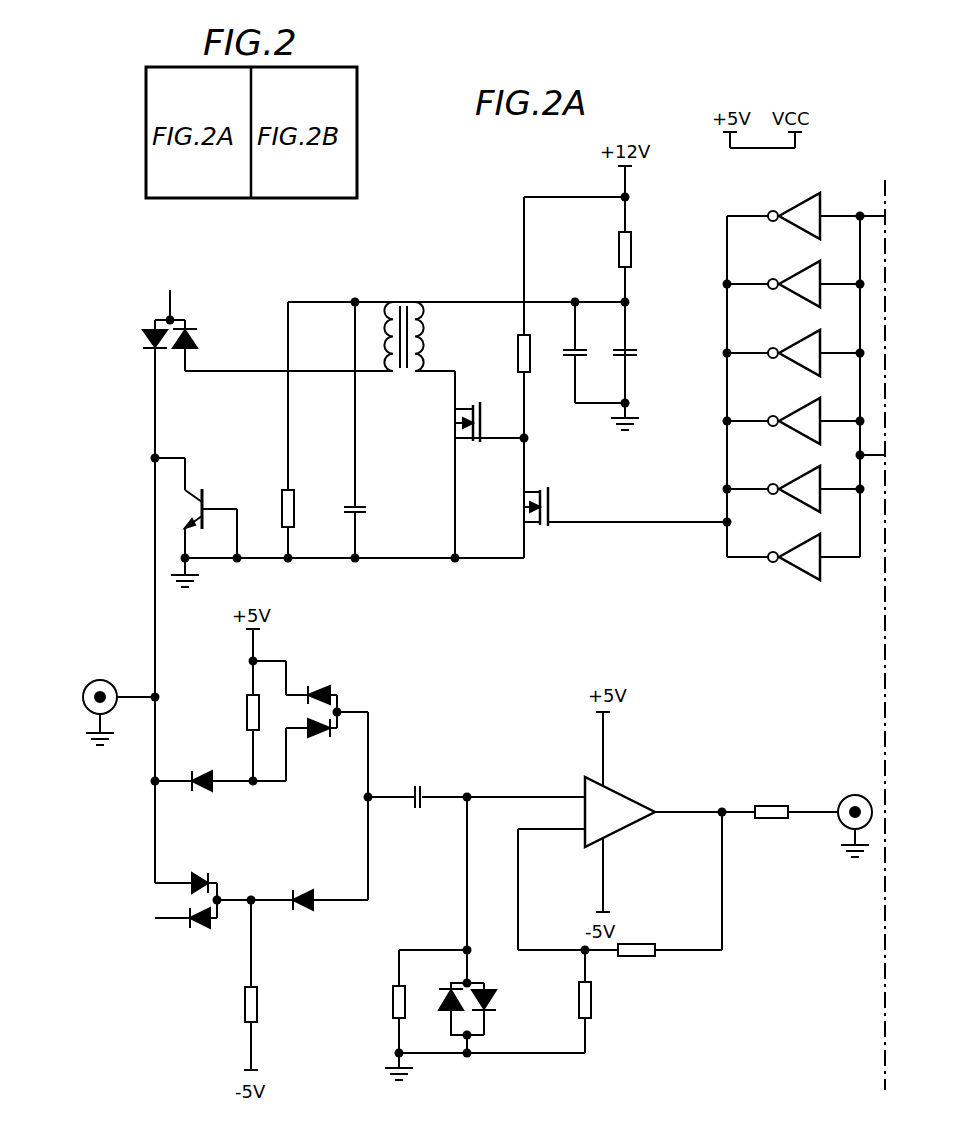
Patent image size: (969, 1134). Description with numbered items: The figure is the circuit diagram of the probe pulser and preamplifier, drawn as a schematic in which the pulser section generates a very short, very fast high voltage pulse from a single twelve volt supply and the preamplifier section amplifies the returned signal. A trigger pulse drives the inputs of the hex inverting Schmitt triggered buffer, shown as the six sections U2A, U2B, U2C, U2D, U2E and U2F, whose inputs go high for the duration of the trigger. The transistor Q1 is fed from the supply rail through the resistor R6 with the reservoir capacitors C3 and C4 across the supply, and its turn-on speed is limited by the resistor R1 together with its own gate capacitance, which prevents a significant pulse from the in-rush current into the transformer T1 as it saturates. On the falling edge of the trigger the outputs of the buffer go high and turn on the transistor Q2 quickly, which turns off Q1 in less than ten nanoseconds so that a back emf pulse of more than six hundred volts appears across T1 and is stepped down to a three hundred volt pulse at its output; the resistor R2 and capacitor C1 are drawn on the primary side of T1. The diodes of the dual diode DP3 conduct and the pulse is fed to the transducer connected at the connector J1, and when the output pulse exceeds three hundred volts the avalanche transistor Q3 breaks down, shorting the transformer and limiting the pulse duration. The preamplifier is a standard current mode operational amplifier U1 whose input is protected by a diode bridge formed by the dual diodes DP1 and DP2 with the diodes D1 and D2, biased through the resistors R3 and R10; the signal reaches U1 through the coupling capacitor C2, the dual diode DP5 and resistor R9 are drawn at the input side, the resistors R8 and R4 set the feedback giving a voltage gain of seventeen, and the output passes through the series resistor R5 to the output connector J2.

The diodes DP3 is at (201, 340).
The avalanche transistor Q3 is at (226, 504).
The resistor 2K7 R2 is at (308, 430).
The capacitor 0.1uF C1 is at (382, 430).
The transformer T1 is at (403, 322).
The transistor Q1 is at (451, 425).
The resistor R1 is at (510, 377).
The resistor 5R0 R6 is at (646, 251).
The capacitor 33uF/16V C3 is at (581, 352).
The capacitor 33uF/16V C4 is at (618, 401).
The transistor Q2 is at (513, 538).
The inverting Schmitt triggered buffer U2A is at (793, 206).
The inverting Schmitt triggered buffer U2B is at (793, 565).
The inverting Schmitt triggered buffer U2C is at (793, 274).
The inverting Schmitt triggered buffer U2D is at (793, 343).
The inverting Schmitt triggered buffer U2E is at (793, 411).
The inverting Schmitt triggered buffer U2F is at (793, 479).
The transducer connector J1 is at (102, 688).
The resistor 10K R3 is at (231, 715).
The diode BYT01-400 D2 is at (208, 784).
The dual diode BAV99 DP1 is at (321, 713).
The dual diode BAV99 DP2 is at (197, 907).
The diode BYT01-400 D1 is at (310, 907).
The resistor 10K R10 is at (271, 985).
The capacitor 0.1uF C2 is at (415, 798).
The op amp EL2130 U1 is at (621, 824).
The resistor 51R R5 is at (775, 811).
The SMA connector J2 is at (855, 801).
The resistor 820R R8 is at (642, 951).
The resistor 51R R4 is at (621, 1001).
The resistor 2K7 R9 is at (381, 1001).
The dual diode BAV99 DP5 is at (494, 1009).